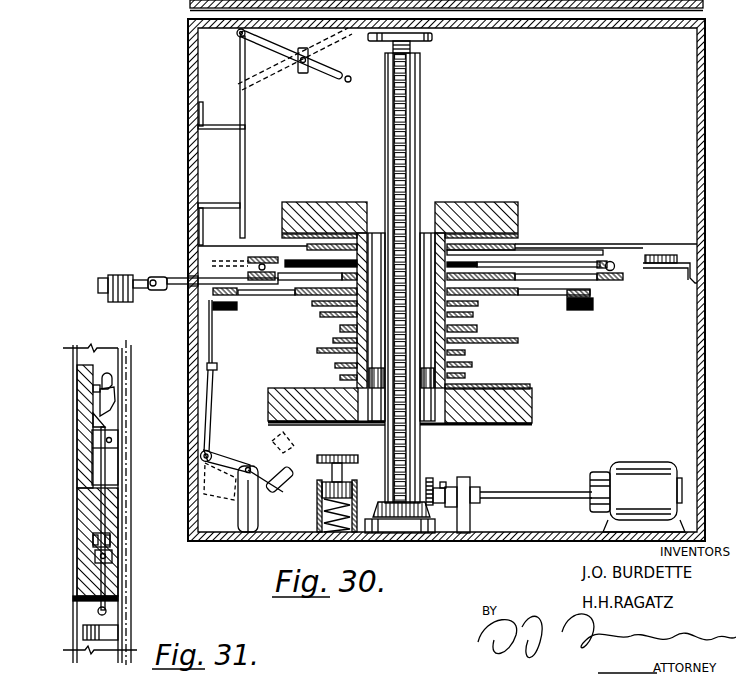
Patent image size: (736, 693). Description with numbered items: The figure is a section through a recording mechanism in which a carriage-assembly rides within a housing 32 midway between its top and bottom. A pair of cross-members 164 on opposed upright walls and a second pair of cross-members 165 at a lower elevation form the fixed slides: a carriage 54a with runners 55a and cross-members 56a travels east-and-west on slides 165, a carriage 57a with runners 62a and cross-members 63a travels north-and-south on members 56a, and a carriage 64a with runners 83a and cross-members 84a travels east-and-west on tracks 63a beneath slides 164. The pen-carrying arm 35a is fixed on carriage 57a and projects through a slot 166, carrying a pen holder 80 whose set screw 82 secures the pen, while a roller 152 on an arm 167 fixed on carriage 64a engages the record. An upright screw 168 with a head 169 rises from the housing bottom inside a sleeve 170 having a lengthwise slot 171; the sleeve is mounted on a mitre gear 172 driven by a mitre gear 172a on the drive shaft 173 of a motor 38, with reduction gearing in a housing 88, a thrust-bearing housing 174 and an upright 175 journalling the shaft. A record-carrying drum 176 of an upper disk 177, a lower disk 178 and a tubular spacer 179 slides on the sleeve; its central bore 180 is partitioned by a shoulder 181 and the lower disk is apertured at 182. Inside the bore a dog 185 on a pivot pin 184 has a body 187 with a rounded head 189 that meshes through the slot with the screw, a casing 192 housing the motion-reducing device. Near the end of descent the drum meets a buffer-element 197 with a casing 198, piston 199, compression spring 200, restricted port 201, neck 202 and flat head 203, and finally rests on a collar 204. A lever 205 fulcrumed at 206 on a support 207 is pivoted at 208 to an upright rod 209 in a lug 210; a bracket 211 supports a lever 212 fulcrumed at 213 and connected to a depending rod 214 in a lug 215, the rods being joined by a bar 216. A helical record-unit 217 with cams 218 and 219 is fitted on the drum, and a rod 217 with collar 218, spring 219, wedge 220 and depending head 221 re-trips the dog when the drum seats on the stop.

In FIG. 30, the housing 32 is at (702, 118).
In FIG. 30, the pen-carrying arm 35a is at (167, 277).
In FIG. 30, the motor 38 is at (637, 497).
In FIG. 30, the carriage 54a is at (266, 296).
In FIG. 30, the runners 55a is at (588, 283).
In FIG. 30, the cross-members 56a is at (530, 296).
In FIG. 30, the carriage 57a is at (624, 278).
In FIG. 30, the runners 62a is at (563, 322).
In FIG. 30, the cross-members 63a is at (618, 276).
In FIG. 30, the carriage 64a is at (573, 259).
In FIG. 30, the pen holder 80 is at (122, 275).
In FIG. 30, the set screw 82 is at (103, 282).
In FIG. 30, the runners 83a is at (605, 261).
In FIG. 30, the cross-members 84a is at (533, 262).
In FIG. 30, the housing 88 is at (603, 474).
In FIG. 30, the roller 152 is at (282, 215).
In FIG. 30, the cross-members 164 is at (680, 244).
In FIG. 30, the cross-members 165 is at (227, 310).
In FIG. 30, the slot 166 is at (192, 286).
In FIG. 30, the arm 167 is at (257, 256).
In FIG. 30, the screw 168 is at (411, 49).
In FIG. 30, the head 169 is at (432, 38).
In FIG. 30, the sleeve 170 is at (385, 142).
In FIG. 31, the sleeve 170 is at (122, 498).
In FIG. 30, the slot 171 is at (400, 167).
In FIG. 30, the mitre gear 172 is at (464, 534).
In FIG. 30, the mitre gear 172a is at (437, 488).
In FIG. 30, the drive shaft 173 is at (557, 492).
In FIG. 30, the housing 174 is at (422, 536).
In FIG. 30, the upright 175 is at (470, 517).
In FIG. 30, the record-carrying drum 176 is at (513, 202).
In FIG. 30, the upper disk 177 is at (473, 213).
In FIG. 30, the lower disk 178 is at (520, 405).
In FIG. 30, the tubular spacer 179 is at (335, 365).
In FIG. 31, the tubular spacer 179 is at (87, 498).
In FIG. 30, the central bore 180 is at (430, 200).
In FIG. 31, the central bore 180 is at (110, 463).
In FIG. 30, the shoulder 181 is at (477, 328).
In FIG. 30, the aperture 182 is at (443, 425).
In FIG. 31, the pivot pin 184 is at (90, 382).
In FIG. 31, the dog 185 is at (115, 388).
In FIG. 31, the body 187 is at (114, 403).
In FIG. 31, the rounded head 189 is at (112, 372).
In FIG. 31, the casing 192 is at (112, 440).
In FIG. 30, the buffer-element 197 is at (318, 527).
In FIG. 30, the casing 198 is at (355, 532).
In FIG. 30, the piston 199 is at (321, 487).
In FIG. 30, the compression spring 200 is at (318, 512).
In FIG. 30, the restricted port 201 is at (372, 534).
In FIG. 30, the neck 202 is at (332, 473).
In FIG. 30, the flat head 203 is at (322, 455).
In FIG. 30, the collar 204 is at (440, 481).
In FIG. 31, the collar 204 is at (100, 632).
In FIG. 30, the lever 205 is at (196, 482).
In FIG. 30, the fulcrum 206 is at (252, 466).
In FIG. 30, the support 207 is at (245, 515).
In FIG. 30, the pivot 208 is at (211, 453).
In FIG. 30, the upright rod 209 is at (211, 388).
In FIG. 30, the lug 210 is at (213, 366).
In FIG. 30, the bracket 211 is at (308, 56).
In FIG. 30, the lever 212 is at (333, 72).
In FIG. 30, the fulcrum 213 is at (299, 62).
In FIG. 30, the depending rod 214 is at (240, 57).
In FIG. 30, the lug 215 is at (235, 126).
In FIG. 30, the bar 216 is at (235, 203).
In FIG. 30, the record-unit 217 is at (525, 388).
In FIG. 31, the record-unit 217 is at (97, 602).
In FIG. 30, the helical cam 218 is at (340, 329).
In FIG. 31, the helical cam 218 is at (112, 558).
In FIG. 30, the helical cam 219 is at (333, 340).
In FIG. 31, the helical cam 219 is at (110, 537).
In FIG. 31, the wedge 220 is at (106, 423).
In FIG. 31, the depending head 221 is at (107, 610).